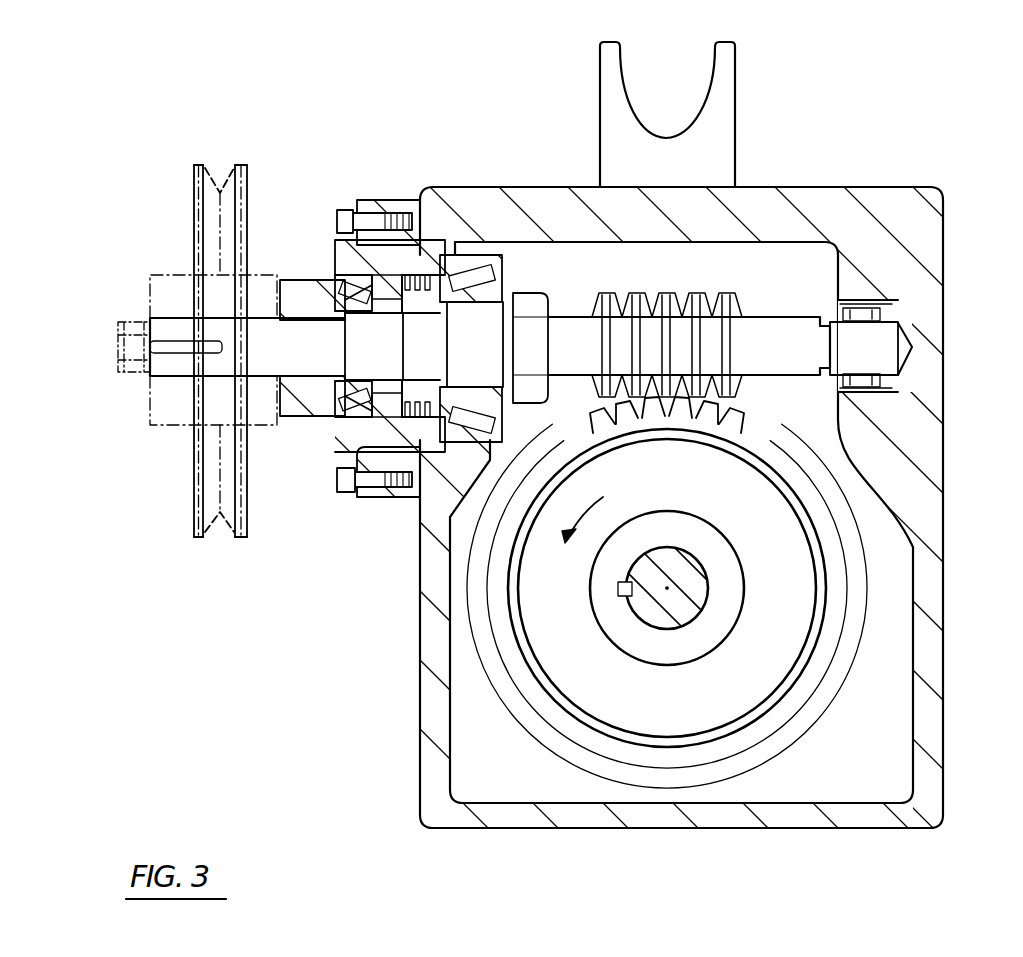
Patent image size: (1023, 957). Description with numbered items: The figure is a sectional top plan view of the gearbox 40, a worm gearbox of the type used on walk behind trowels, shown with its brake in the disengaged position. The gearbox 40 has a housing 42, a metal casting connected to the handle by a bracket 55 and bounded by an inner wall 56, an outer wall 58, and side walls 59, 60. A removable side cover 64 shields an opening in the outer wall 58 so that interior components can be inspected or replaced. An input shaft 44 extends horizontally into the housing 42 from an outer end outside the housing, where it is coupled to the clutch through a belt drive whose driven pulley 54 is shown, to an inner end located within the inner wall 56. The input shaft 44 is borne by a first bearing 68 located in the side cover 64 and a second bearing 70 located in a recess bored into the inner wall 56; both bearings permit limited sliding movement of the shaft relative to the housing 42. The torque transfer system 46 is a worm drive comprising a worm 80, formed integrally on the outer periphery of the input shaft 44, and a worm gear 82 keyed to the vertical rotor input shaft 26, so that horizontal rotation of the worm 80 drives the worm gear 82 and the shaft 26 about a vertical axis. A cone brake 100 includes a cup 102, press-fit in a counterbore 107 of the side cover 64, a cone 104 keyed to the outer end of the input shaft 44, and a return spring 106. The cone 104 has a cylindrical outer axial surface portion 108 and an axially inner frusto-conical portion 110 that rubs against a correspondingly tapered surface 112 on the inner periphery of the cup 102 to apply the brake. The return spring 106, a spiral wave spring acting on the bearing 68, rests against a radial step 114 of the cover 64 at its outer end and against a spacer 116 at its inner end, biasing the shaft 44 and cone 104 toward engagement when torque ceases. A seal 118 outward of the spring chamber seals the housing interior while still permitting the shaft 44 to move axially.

The gearbox 40 is at (511, 449).
The housing 42 is at (511, 497).
The input shaft 44 is at (276, 362).
The torque transfer system 46 is at (689, 324).
The driven pulley 54 is at (194, 517).
The bracket 55 is at (728, 104).
The inner wall 56 is at (945, 500).
The outer wall 58 is at (418, 778).
The side wall 59 is at (905, 187).
The side wall 60 is at (825, 834).
The side cover 64 is at (370, 205).
The first bearing 68 is at (520, 300).
The second bearing 70 is at (880, 308).
The worm 80 is at (700, 297).
The worm gear 82 is at (681, 592).
The rotor input shaft 26 is at (685, 620).
The cone brake 100 is at (412, 316).
The cup 102 is at (331, 314).
The cone 104 is at (316, 389).
The return spring 106 is at (427, 250).
The counterbore 107 is at (343, 453).
The cylindrical outer axial surface portion 108 is at (303, 437).
The inner frusto-conical portion 110 is at (365, 278).
The tapered surface 112 is at (340, 297).
The radial step 114 is at (466, 350).
The spacer 116 is at (440, 280).
The seal 118 is at (390, 385).